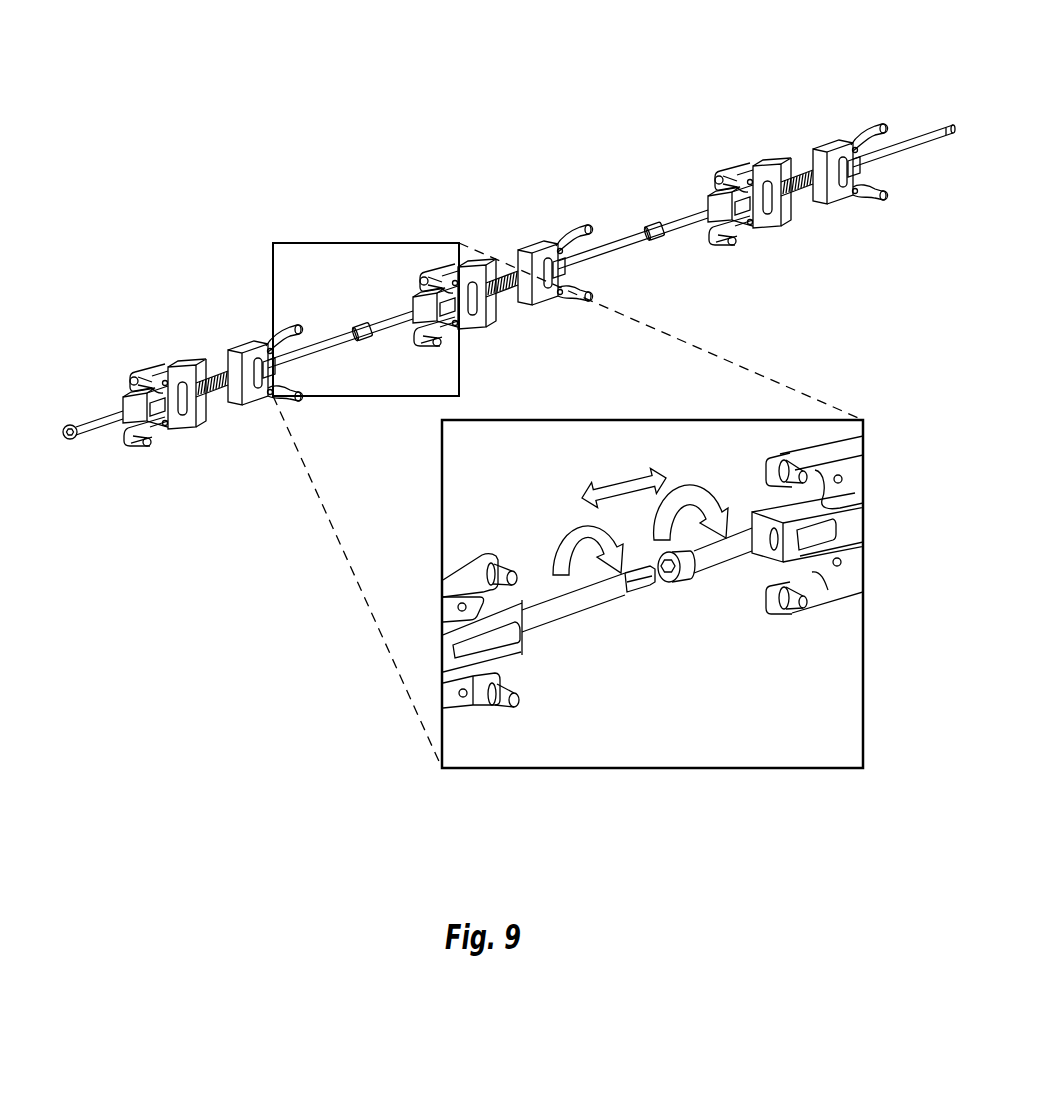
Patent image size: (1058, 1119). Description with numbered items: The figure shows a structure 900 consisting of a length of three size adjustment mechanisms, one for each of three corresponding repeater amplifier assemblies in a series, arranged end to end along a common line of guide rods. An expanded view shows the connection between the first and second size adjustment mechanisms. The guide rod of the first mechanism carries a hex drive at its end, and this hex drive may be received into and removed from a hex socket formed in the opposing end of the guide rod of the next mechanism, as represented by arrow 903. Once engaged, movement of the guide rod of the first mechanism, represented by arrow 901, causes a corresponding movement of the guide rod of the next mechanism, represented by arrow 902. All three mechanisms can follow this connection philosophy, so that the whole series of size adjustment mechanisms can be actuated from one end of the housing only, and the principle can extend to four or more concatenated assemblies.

The structure 900 is at (501, 28).
The arrow 901 is at (568, 524).
The arrow 902 is at (690, 489).
The arrow 903 is at (617, 475).